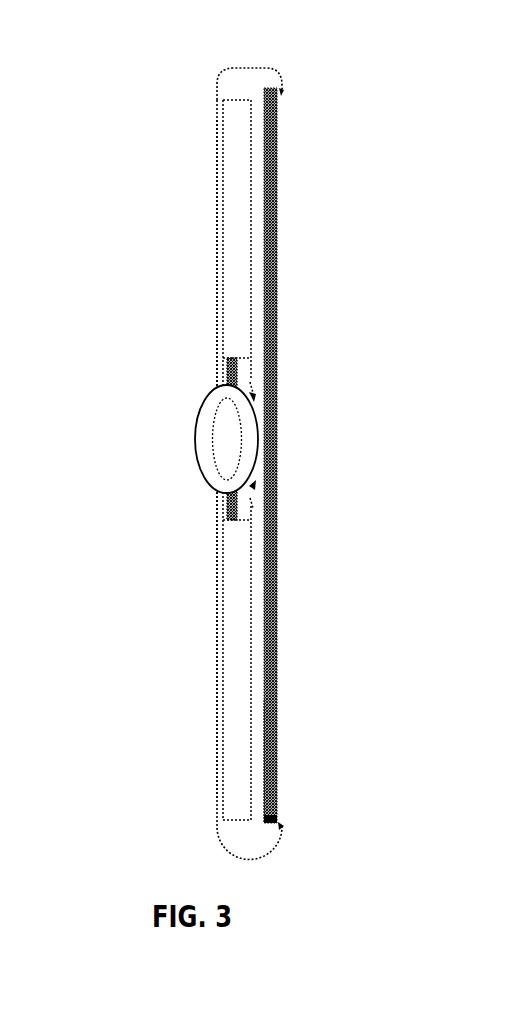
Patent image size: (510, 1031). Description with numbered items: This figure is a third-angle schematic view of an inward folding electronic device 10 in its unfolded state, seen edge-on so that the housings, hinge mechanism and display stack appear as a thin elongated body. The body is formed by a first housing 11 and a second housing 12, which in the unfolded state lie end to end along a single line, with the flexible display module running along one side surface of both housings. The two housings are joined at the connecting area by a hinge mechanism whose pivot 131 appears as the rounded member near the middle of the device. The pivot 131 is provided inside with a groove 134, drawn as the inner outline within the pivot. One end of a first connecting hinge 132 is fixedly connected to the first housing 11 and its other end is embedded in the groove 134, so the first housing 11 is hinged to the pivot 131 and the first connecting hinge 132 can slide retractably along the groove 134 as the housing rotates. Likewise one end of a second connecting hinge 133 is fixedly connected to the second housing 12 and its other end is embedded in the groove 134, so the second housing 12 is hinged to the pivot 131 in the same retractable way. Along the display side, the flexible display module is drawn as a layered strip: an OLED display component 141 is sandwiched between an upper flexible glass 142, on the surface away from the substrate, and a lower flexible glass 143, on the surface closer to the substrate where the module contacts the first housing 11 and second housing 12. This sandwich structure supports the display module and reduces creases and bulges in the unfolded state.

The inward folding electronic device 10 is at (167, 113).
The first housing 11 is at (243, 114).
The second housing 12 is at (217, 577).
The pivot 131 is at (198, 417).
The first connecting hinge 132 is at (227, 370).
The second connecting hinge 133 is at (227, 503).
The groove 134 is at (213, 457).
The OLED display component 141 is at (278, 803).
The upper flexible glass 142 is at (278, 781).
The lower flexible glass 143 is at (266, 812).